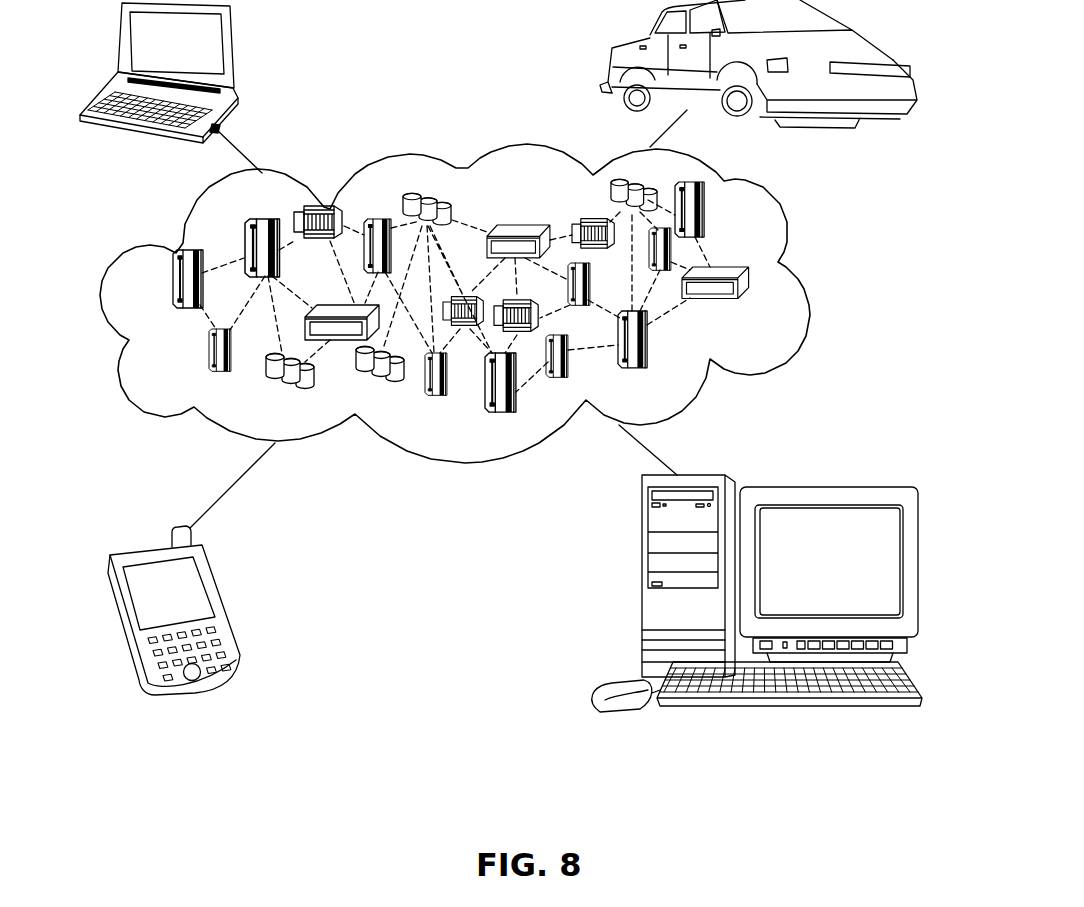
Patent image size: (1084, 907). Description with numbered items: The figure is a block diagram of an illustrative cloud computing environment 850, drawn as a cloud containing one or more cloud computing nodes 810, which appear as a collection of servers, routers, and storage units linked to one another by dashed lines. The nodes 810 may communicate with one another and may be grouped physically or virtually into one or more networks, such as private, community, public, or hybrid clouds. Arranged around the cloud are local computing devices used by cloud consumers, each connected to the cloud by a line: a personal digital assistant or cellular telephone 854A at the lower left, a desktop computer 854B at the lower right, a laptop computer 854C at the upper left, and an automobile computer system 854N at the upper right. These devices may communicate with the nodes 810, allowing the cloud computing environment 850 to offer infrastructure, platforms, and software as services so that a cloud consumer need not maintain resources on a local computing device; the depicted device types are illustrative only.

The cloud computing environment 850 is at (795, 243).
The cloud computing nodes 810 is at (778, 305).
The personal digital assistant or cellular telephone 854A is at (222, 603).
The desktop computer 854B is at (643, 583).
The laptop computer 854C is at (233, 47).
The automobile computer system 854N is at (614, 52).